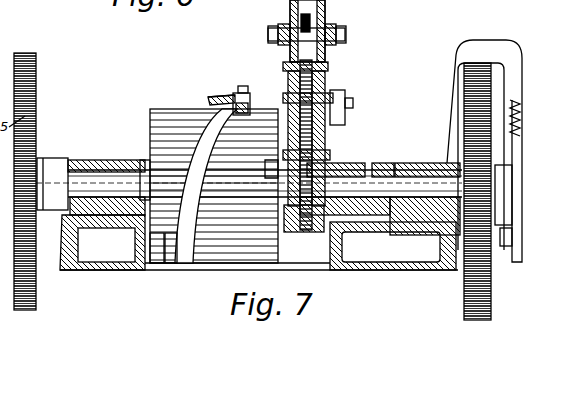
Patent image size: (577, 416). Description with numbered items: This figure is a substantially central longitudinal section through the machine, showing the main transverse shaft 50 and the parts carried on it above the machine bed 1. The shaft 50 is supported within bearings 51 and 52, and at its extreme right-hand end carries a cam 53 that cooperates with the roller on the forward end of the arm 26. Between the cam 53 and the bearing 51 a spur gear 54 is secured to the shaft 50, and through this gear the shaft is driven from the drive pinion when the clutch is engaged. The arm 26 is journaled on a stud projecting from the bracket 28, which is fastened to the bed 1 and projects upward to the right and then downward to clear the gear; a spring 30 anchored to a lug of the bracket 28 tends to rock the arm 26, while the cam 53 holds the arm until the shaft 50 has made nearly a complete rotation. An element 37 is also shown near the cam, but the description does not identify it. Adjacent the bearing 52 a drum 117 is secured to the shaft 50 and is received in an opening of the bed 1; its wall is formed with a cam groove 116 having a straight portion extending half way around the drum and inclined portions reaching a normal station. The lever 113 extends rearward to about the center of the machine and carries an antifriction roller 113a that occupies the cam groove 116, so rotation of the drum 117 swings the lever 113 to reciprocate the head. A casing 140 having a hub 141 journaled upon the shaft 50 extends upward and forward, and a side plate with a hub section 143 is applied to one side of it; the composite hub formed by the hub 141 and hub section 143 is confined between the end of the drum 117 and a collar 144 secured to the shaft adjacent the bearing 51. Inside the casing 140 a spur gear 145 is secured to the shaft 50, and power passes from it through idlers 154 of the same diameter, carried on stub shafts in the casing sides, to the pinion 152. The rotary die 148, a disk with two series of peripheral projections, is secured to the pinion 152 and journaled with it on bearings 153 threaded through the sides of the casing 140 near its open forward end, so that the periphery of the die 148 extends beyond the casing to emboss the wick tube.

The machine bed 1 is at (352, 265).
The arm 26 is at (523, 186).
The bracket 28 is at (506, 86).
The spring 30 is at (521, 126).
The stop 37 is at (508, 243).
The shaft 50 is at (80, 178).
The bearing 51 is at (402, 170).
The bearing 52 is at (104, 162).
The cam 53 is at (512, 210).
The spur gear 54 is at (492, 262).
The lever 113 is at (221, 95).
The antifriction roller 113a is at (214, 110).
The cam groove 116 is at (188, 250).
The drum 117 is at (158, 265).
The casing 140 is at (337, 144).
The hub 141 is at (352, 154).
The hub section 143 is at (275, 170).
The collar 144 is at (384, 168).
The spur gear 145 is at (292, 226).
The rotary die 148 is at (330, 57).
The pinion 152 is at (290, 22).
The bearings 153 is at (282, 46).
The idlers 154 is at (318, 76).